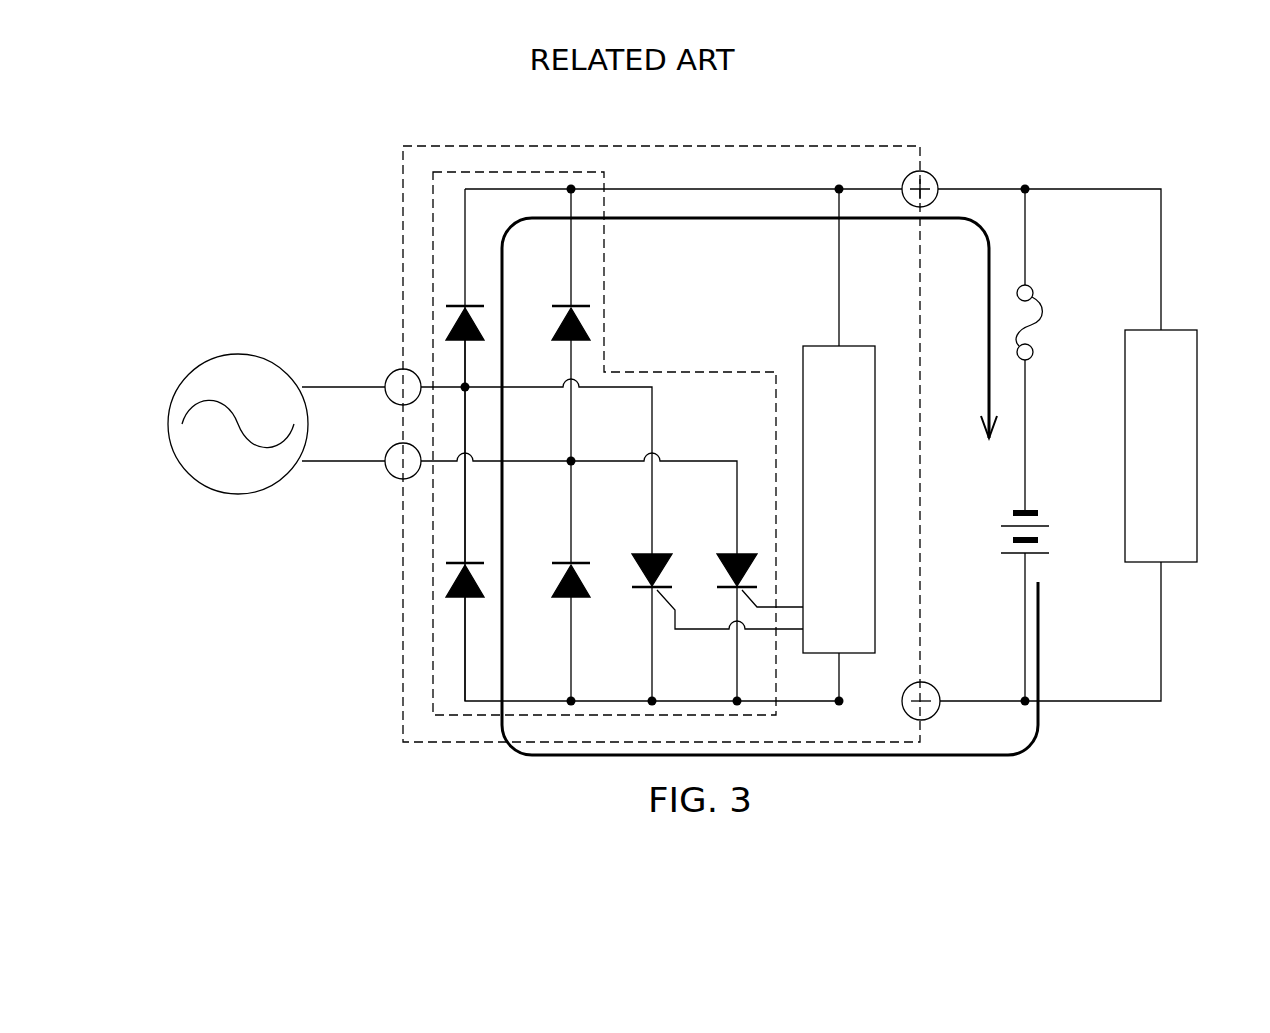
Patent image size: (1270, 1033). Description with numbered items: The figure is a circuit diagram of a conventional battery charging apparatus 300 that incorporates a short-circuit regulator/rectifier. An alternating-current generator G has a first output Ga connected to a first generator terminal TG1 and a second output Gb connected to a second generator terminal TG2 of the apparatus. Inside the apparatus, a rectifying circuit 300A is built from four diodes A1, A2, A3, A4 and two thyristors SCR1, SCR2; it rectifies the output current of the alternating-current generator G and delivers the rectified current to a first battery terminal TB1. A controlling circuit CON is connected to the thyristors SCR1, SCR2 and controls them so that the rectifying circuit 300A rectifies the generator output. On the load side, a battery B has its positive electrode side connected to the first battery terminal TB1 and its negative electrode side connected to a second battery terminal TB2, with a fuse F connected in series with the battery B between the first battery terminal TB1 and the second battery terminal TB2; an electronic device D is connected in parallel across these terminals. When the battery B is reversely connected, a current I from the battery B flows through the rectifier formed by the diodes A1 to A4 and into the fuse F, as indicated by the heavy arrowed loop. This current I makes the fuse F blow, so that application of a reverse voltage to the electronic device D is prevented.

The battery charging apparatus 300 is at (716, 147).
The rectifying circuit 300A is at (506, 172).
The alternating-current generator G is at (238, 354).
The first output Ga is at (303, 386).
The second output Gb is at (303, 462).
The first generator terminal TG1 is at (393, 375).
The second generator terminal TG2 is at (392, 474).
The diode A1 is at (447, 321).
The diode A2 is at (447, 583).
The diode A3 is at (558, 324).
The diode A4 is at (558, 585).
The thyristor SCR1 is at (658, 555).
The thyristor SCR2 is at (742, 555).
The controlling circuit CON is at (857, 345).
The first battery terminal TB1 is at (923, 171).
The second battery terminal TB2 is at (936, 716).
The fuse F is at (1033, 318).
The battery B is at (1040, 513).
The electronic device D is at (1198, 445).
The current I is at (1041, 720).